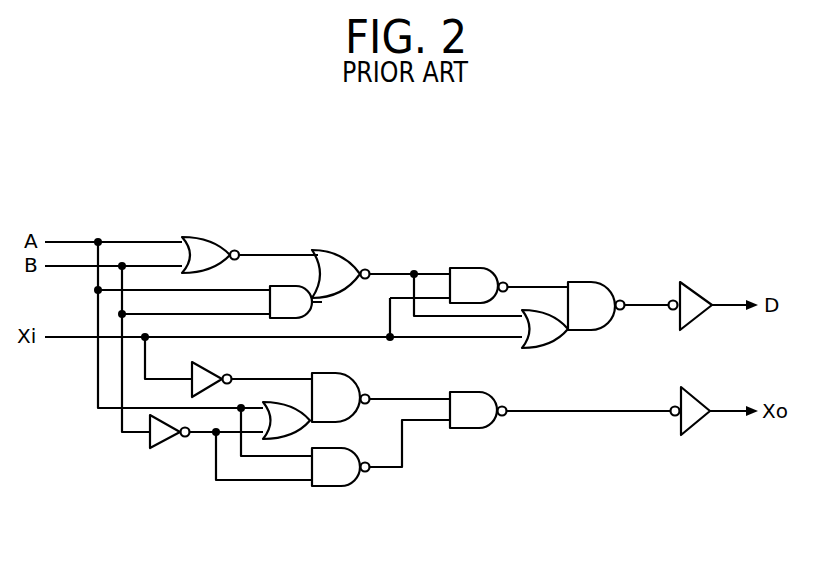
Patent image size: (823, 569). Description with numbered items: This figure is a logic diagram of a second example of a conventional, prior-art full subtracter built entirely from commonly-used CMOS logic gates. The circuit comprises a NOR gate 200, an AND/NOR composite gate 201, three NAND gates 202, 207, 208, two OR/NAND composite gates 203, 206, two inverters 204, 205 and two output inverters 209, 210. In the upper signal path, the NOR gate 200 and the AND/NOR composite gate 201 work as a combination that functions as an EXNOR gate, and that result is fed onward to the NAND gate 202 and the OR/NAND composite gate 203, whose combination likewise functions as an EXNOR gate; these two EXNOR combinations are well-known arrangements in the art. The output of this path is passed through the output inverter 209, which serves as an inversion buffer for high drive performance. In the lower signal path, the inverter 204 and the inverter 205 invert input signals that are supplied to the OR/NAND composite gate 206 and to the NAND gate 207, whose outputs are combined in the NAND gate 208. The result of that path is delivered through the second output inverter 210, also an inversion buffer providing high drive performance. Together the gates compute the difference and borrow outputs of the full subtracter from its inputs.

The NOR gate 200 is at (213, 236).
The AND/NOR composite gate 201 is at (335, 250).
The NAND gate 202 is at (473, 265).
The OR/NAND composite gate 203 is at (585, 281).
The inverter 204 is at (208, 366).
The inverter 205 is at (150, 447).
The OR/NAND composite gate 206 is at (350, 373).
The NAND gate 207 is at (343, 487).
The NAND gate 208 is at (463, 389).
The output inverter 209 is at (698, 288).
The output inverter 210 is at (712, 380).